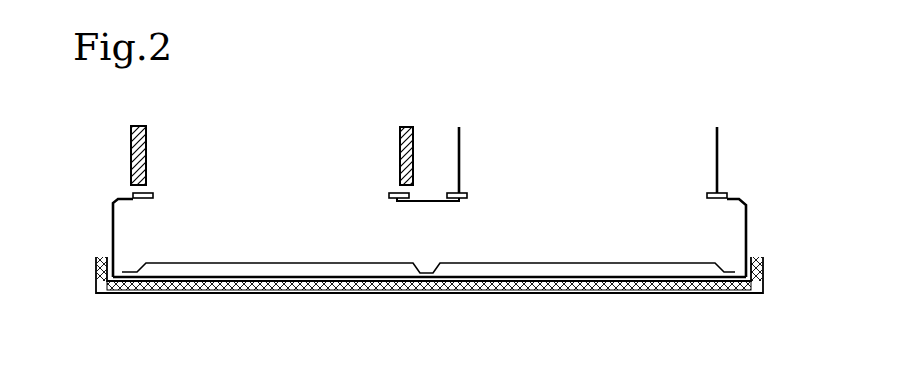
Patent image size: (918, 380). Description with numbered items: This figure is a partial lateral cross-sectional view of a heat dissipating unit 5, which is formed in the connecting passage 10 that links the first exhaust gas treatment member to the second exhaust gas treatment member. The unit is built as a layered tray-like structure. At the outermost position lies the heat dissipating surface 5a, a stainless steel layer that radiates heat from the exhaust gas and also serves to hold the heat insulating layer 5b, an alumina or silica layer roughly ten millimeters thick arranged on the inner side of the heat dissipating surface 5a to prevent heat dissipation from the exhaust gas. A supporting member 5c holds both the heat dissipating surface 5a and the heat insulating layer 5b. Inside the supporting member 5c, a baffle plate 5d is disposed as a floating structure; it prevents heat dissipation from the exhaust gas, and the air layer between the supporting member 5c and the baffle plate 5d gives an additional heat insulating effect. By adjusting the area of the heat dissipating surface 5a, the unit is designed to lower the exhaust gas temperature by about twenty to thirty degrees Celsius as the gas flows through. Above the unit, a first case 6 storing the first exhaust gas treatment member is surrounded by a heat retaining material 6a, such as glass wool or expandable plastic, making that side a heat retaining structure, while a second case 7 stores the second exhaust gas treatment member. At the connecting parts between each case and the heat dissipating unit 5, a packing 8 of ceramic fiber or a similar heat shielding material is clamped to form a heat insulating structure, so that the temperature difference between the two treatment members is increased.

The heat dissipating unit 5 is at (458, 293).
The heat dissipating surface 5a is at (601, 293).
The heat insulating layer 5b is at (759, 256).
The supporting member 5c is at (556, 276).
The baffle plate 5d is at (500, 263).
The first case 6 is at (146, 150).
The heat retaining material 6a is at (134, 154).
The second case 7 is at (461, 145).
The packing 8 is at (133, 194).
The connecting passage 10 is at (295, 233).